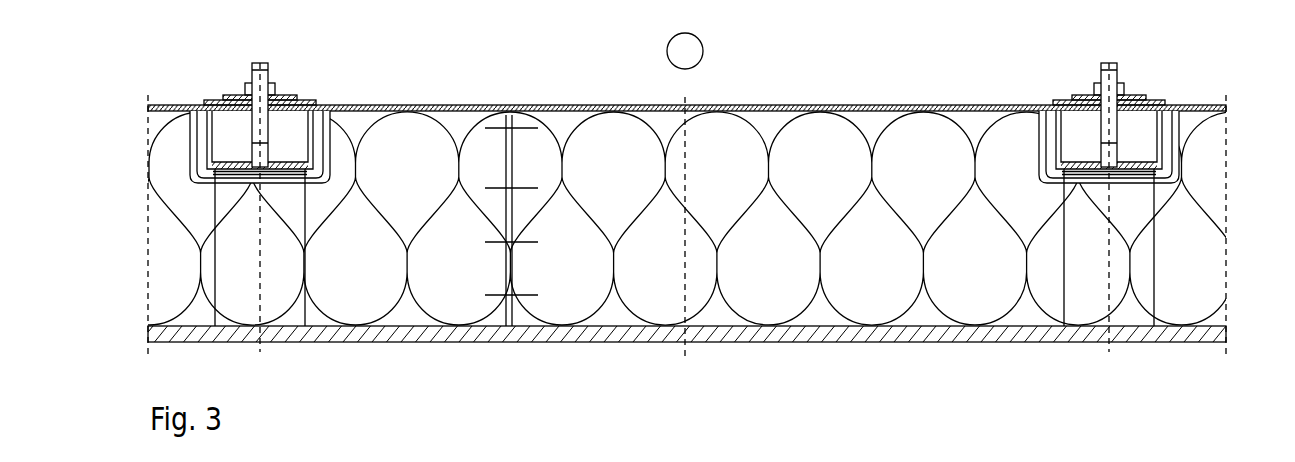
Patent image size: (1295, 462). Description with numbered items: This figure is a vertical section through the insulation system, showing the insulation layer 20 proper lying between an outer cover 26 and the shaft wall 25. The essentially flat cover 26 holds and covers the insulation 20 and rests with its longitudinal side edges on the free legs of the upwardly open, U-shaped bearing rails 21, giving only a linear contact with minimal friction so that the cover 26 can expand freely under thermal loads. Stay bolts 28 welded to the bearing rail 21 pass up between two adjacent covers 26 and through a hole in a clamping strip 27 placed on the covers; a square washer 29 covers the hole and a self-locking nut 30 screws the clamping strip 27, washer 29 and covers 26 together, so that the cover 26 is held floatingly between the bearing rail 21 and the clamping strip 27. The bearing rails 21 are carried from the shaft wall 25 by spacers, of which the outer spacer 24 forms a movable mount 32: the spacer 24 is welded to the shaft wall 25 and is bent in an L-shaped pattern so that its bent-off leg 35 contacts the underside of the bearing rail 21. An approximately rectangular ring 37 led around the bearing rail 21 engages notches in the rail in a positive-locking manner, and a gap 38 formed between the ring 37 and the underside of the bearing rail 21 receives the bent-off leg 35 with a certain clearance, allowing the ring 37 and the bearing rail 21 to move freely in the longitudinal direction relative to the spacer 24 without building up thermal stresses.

The insulation layer 20 is at (822, 290).
The bearing rail 21 is at (203, 150).
The spacer 24 is at (280, 297).
The shaft wall 25 is at (605, 343).
The cover 26 is at (157, 106).
The clamping strip 27 is at (200, 101).
The stay bolt 28 is at (257, 62).
The washer 29 is at (293, 96).
The nut 30 is at (276, 83).
The movable mount 32 is at (687, 195).
The bent-off leg 35 is at (223, 175).
The ring 37 is at (190, 125).
The gap 38 is at (203, 172).